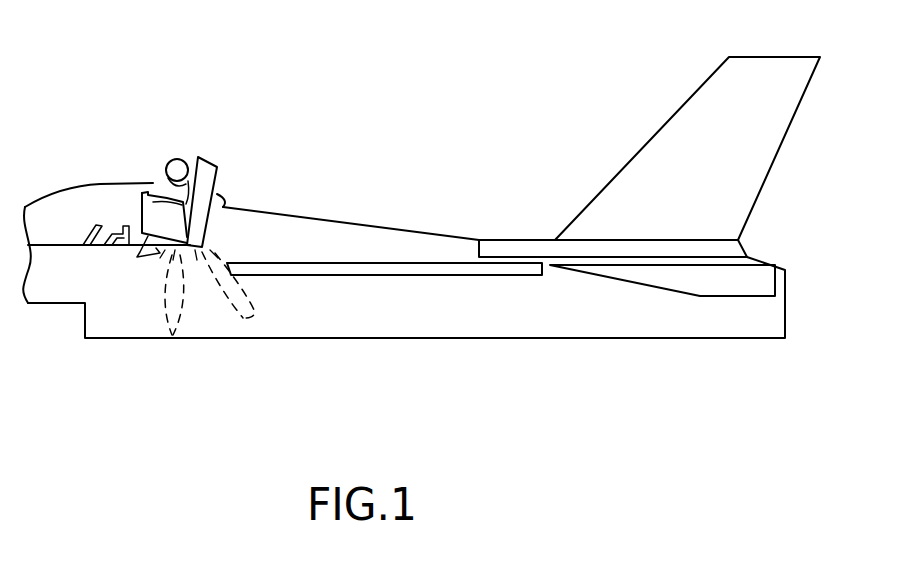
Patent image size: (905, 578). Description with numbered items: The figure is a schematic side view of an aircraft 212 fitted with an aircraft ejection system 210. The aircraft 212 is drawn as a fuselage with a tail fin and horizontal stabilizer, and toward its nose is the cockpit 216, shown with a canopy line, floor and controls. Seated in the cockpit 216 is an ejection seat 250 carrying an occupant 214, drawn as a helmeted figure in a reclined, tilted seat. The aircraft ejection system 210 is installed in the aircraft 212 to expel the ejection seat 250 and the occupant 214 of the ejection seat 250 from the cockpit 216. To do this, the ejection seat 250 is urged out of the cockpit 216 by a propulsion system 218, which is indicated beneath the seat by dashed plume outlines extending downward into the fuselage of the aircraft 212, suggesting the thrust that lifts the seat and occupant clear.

The aircraft ejection system 210 is at (317, 123).
The aircraft 212 is at (387, 310).
The occupant 214 is at (176, 161).
The cockpit 216 is at (80, 236).
The propulsion system 218 is at (172, 305).
The ejection seat 250 is at (212, 166).